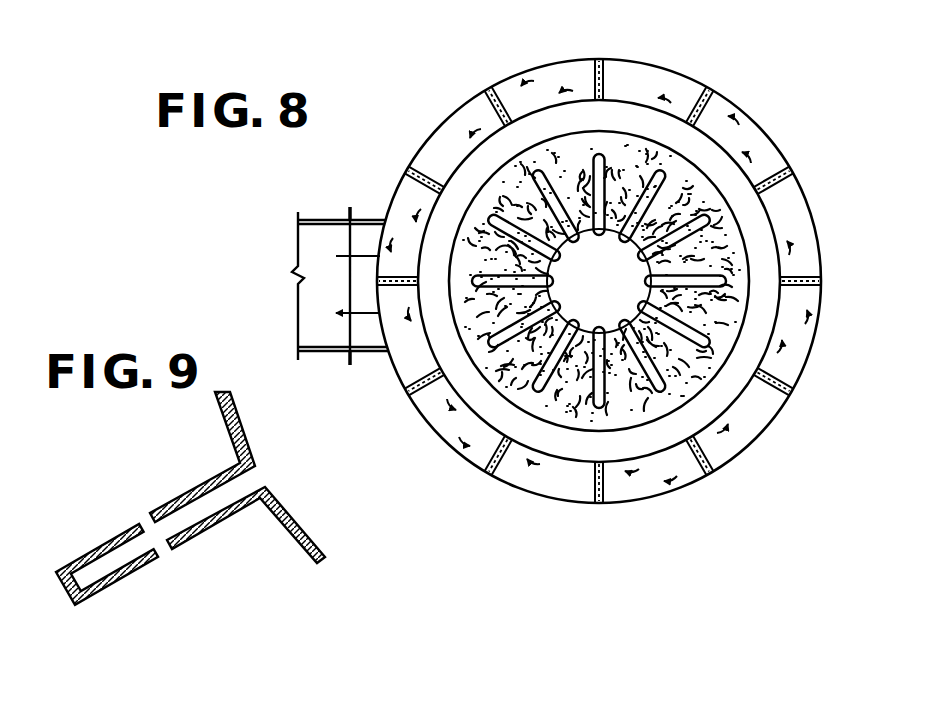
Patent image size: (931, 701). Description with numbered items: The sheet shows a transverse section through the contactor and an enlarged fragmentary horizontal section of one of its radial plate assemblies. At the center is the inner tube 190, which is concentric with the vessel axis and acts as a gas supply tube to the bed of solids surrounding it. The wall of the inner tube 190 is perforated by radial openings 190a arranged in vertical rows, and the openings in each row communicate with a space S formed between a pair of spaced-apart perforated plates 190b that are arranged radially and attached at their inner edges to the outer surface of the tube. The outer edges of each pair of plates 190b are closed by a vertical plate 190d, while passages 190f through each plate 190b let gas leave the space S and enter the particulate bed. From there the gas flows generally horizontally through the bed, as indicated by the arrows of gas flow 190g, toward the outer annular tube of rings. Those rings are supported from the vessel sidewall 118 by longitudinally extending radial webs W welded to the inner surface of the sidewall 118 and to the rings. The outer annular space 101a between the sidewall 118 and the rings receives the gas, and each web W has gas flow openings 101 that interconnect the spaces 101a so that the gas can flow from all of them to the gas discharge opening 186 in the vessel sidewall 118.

In FIG. 8, the gas flow openings 101 is at (797, 280).
In FIG. 8, the outer annular space 101a is at (616, 495).
In FIG. 8, the vessel sidewall 118 is at (750, 120).
In FIG. 8, the gas discharge opening 186 is at (372, 215).
In FIG. 8, the inner tube 190 is at (612, 332).
In FIG. 9, the inner tube 190 is at (244, 433).
In FIG. 9, the radial openings 190a is at (262, 478).
In FIG. 8, the perforated plates 190b is at (556, 182).
In FIG. 9, the perforated plates 190b is at (198, 487).
In FIG. 9, the vertical plate 190d is at (67, 587).
In FIG. 9, the passages 190f is at (127, 578).
In FIG. 8, the gas flow 190g is at (683, 152).
In FIG. 8, the webs W is at (720, 470).
In FIG. 9, the space S is at (212, 505).